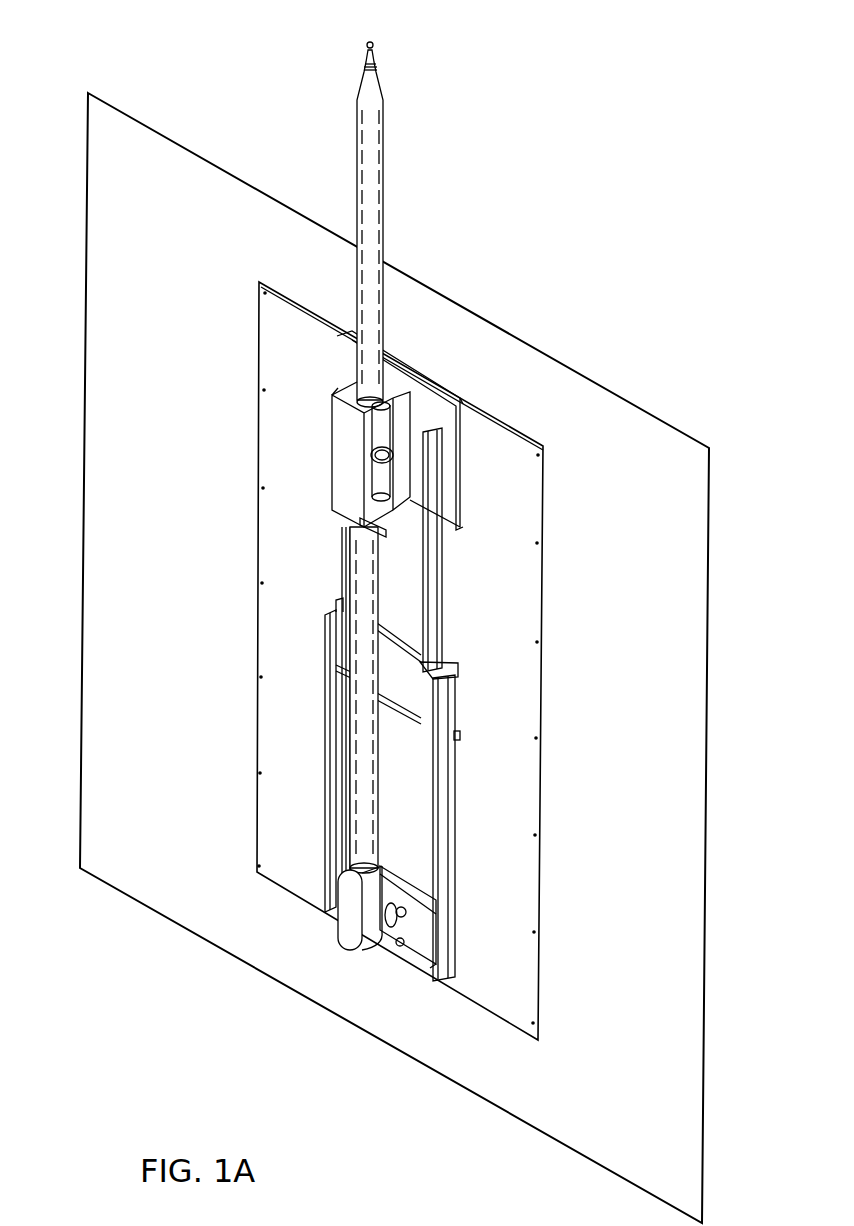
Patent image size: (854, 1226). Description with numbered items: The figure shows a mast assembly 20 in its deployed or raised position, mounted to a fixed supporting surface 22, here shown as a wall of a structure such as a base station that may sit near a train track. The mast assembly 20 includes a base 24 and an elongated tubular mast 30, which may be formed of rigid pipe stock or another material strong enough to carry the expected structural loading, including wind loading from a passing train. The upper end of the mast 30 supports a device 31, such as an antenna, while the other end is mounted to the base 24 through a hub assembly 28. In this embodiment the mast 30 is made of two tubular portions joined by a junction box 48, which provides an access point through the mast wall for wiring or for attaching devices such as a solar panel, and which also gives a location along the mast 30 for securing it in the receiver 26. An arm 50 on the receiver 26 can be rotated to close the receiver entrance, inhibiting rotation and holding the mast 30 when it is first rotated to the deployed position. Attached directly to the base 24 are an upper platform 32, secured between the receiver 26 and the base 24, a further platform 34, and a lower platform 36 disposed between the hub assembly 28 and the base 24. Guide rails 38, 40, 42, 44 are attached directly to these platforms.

The mast assembly 20 is at (584, 350).
The supporting surface 22 is at (96, 200).
The base 24 is at (527, 776).
The receiver 26 is at (340, 462).
The hub assembly 28 is at (360, 966).
The mast 30 is at (368, 213).
The device 31 is at (454, 50).
The upper platform 32 is at (447, 428).
The platform 34 is at (407, 693).
The lower platform 36 is at (402, 873).
The guide rail 38 is at (457, 875).
The guide rail 40 is at (440, 625).
The guide rail 42 is at (328, 767).
The guide rail 44 is at (340, 545).
The junction box 48 is at (385, 437).
The arm 50 is at (390, 518).